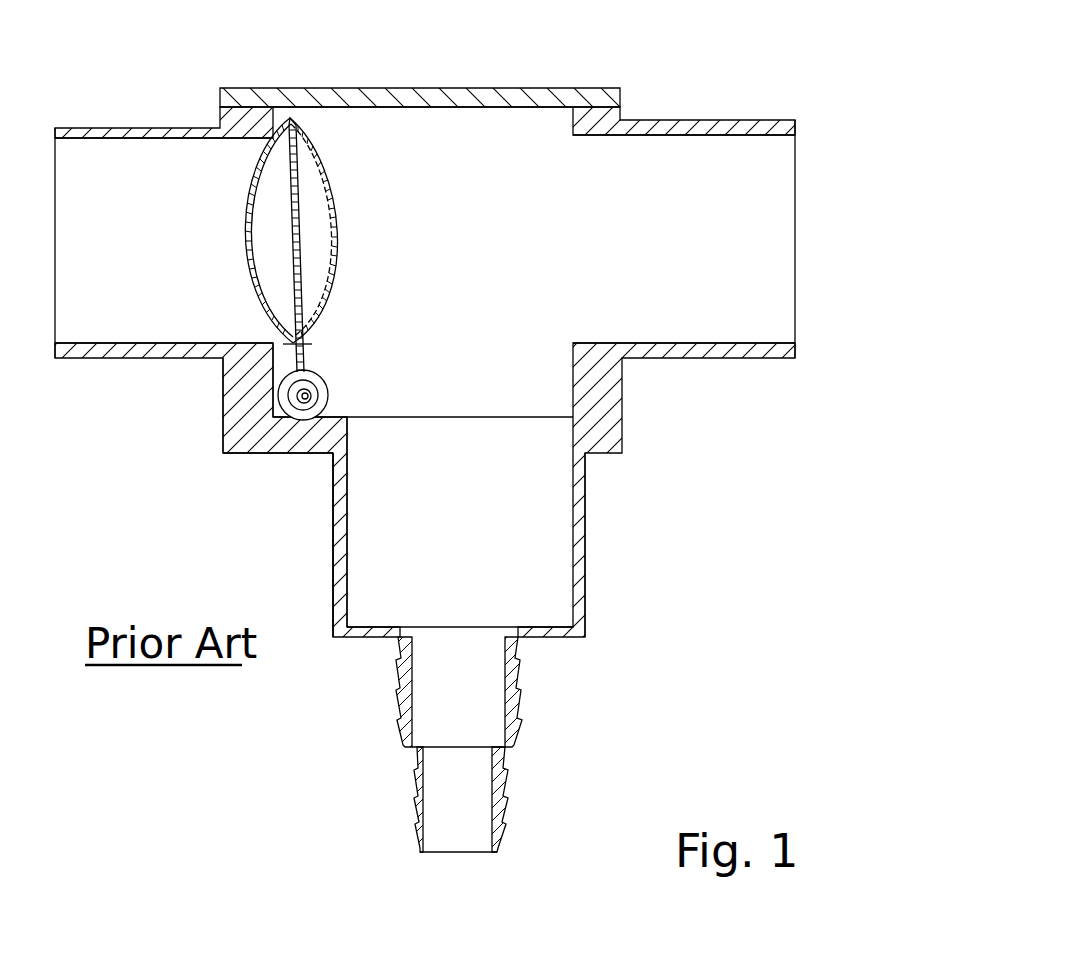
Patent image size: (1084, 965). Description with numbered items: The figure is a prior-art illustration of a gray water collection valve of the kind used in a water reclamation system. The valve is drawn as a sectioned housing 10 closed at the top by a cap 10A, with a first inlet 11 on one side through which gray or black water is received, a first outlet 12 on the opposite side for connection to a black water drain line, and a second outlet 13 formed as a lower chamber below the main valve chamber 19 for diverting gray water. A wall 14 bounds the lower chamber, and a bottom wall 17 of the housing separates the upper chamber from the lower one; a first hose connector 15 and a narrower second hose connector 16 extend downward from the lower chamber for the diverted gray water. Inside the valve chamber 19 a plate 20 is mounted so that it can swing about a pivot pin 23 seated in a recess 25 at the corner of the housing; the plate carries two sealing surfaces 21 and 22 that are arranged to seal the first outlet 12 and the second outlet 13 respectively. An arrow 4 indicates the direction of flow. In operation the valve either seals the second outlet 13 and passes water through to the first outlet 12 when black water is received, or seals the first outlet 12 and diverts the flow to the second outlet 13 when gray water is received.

The flow direction arrow 4 is at (245, 314).
The valve housing 10 is at (628, 438).
The housing cap 10A is at (533, 88).
The first inlet 11 is at (735, 122).
The first outlet 12 is at (117, 128).
The second outlet 13 is at (590, 562).
The chamber wall 14 is at (337, 530).
The upper hose connector 15 is at (514, 670).
The lower hose connector 16 is at (412, 788).
The housing bottom wall 17 is at (258, 447).
The valve chamber 19 is at (472, 256).
The plate 20 is at (296, 205).
The sealing surface 21 is at (243, 225).
The sealing surface 22 is at (342, 240).
The pivot pin 23 is at (318, 420).
The pivot recess 25 is at (276, 383).